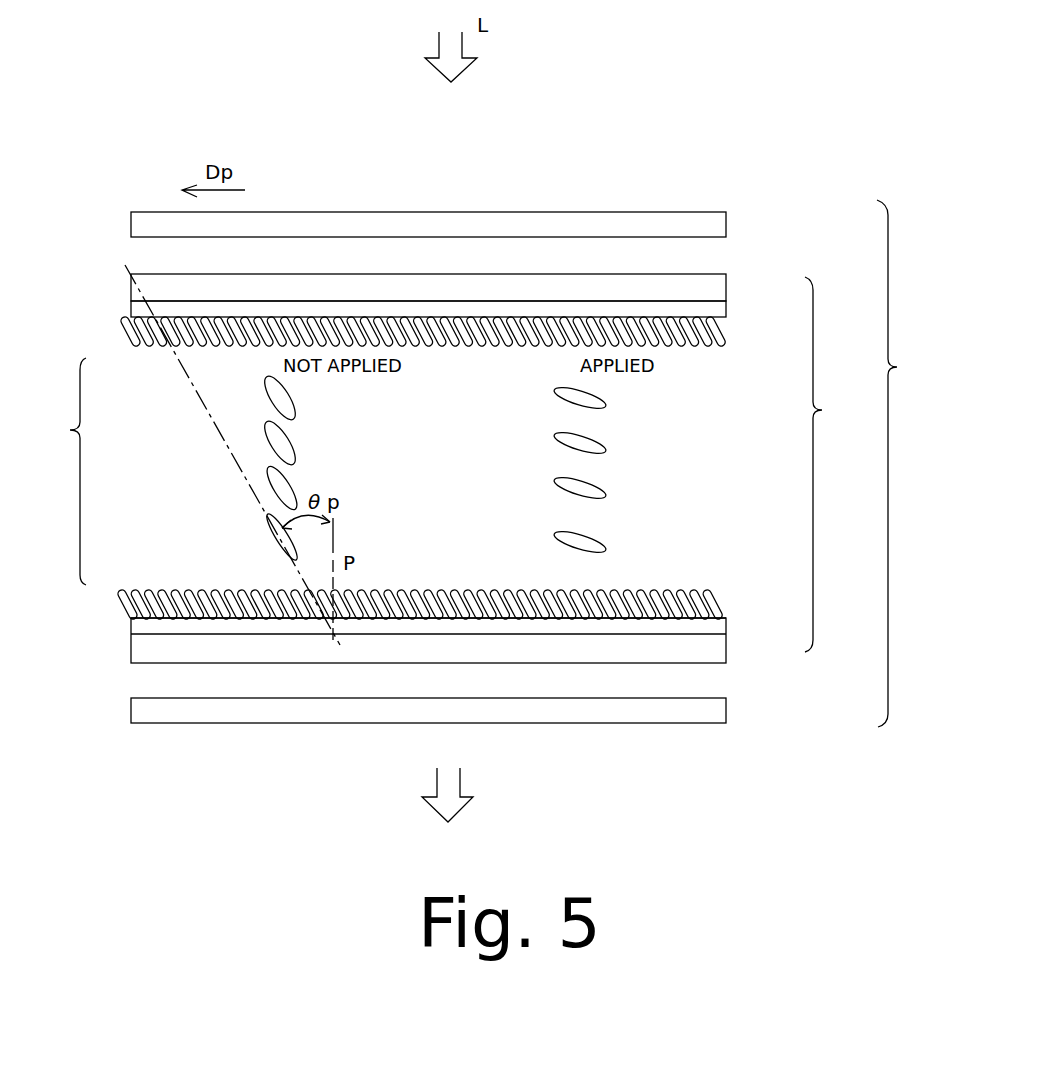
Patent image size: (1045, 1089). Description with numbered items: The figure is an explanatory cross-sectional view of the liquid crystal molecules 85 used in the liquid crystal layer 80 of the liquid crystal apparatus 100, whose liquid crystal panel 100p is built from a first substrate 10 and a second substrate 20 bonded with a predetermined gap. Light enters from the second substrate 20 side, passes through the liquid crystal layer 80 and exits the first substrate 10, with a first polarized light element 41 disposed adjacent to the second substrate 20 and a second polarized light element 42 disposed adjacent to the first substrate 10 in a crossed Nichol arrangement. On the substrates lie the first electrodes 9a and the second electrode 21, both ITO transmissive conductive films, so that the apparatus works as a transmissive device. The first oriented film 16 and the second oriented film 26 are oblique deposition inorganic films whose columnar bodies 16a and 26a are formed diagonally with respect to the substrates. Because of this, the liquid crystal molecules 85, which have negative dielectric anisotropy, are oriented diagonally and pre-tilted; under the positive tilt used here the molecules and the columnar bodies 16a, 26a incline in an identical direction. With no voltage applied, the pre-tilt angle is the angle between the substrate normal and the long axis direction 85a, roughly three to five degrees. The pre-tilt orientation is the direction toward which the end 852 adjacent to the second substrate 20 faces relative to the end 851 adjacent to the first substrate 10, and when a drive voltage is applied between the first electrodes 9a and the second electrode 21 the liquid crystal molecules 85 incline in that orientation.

The first polarized light element 41 is at (727, 220).
The second substrate 20 is at (727, 290).
The second electrode 21 is at (727, 310).
The second oriented film 26 is at (727, 343).
The columnar bodies 26a is at (562, 318).
The first substrate 10 is at (718, 647).
The first electrodes 9a is at (722, 612).
The first oriented film 16 is at (708, 597).
The columnar bodies 16a is at (417, 590).
The second polarized light element 42 is at (718, 708).
The liquid crystal molecules 85 is at (429, 475).
The end adjacent to the first substrate 851 is at (295, 558).
The end adjacent to the second substrate 852 is at (279, 507).
The long axis direction 85a is at (198, 397).
The liquid crystal layer 80 is at (59, 471).
The liquid crystal panel 100p is at (839, 464).
The liquid crystal apparatus 100 is at (907, 463).